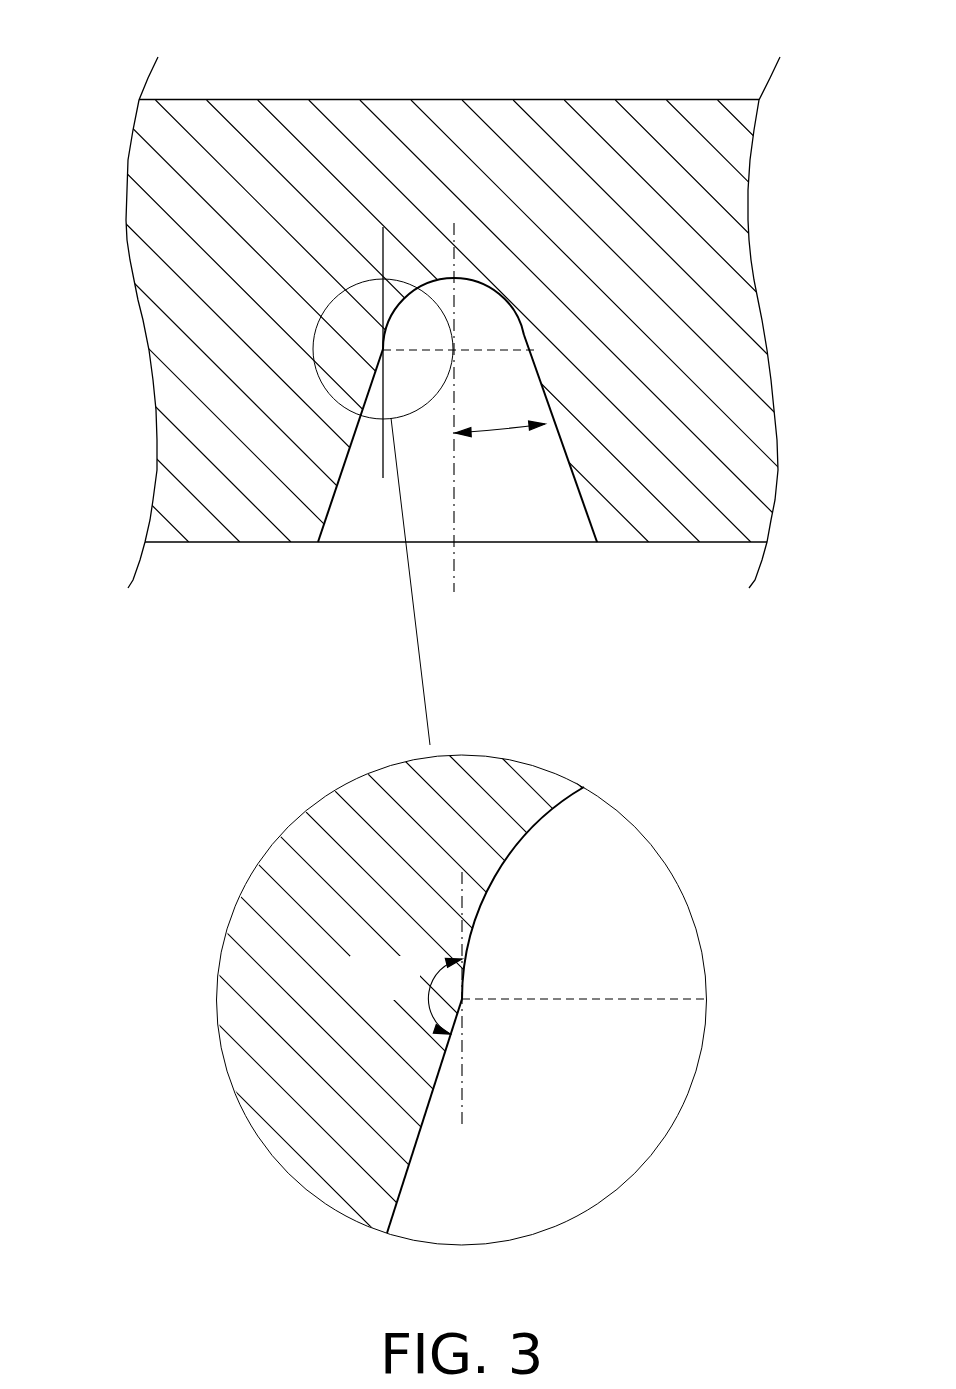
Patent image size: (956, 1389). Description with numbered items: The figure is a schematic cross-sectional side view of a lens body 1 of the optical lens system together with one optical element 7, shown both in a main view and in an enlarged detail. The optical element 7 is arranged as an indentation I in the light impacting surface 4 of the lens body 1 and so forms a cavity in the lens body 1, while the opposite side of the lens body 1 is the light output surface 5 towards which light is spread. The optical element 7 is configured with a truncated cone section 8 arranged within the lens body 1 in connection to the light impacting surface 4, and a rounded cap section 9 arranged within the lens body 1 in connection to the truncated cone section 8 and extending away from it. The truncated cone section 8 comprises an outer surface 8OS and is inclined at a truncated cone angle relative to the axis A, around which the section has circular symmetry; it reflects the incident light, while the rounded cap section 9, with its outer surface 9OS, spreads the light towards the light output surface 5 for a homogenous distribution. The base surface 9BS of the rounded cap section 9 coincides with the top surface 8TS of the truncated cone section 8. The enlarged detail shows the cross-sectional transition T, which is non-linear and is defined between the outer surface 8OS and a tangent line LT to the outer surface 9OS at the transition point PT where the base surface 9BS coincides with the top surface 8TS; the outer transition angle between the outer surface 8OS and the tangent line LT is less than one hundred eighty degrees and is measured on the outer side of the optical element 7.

The lens body 1 is at (478, 322).
The light impacting surface 4 is at (258, 546).
The light output surface 5 is at (286, 97).
The optical element 7 is at (439, 628).
The truncated cone section 8 is at (439, 762).
The outer surface of the truncated cone section 8OS is at (410, 1132).
The top surface of the truncated cone section 8TS is at (631, 899).
The rounded cap section 9 is at (557, 508).
The outer surface of the rounded cap section 9OS is at (503, 851).
The base surface of the rounded cap section 9BS is at (631, 899).
The axis A is at (455, 575).
The cross-sectional transition T is at (537, 351).
The indentation I is at (553, 422).
The transition point PT is at (471, 1005).
The tangent line LT is at (462, 1097).